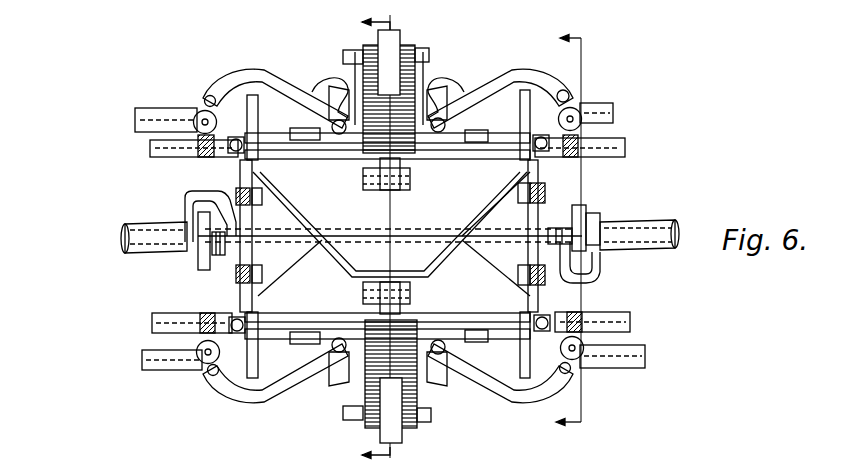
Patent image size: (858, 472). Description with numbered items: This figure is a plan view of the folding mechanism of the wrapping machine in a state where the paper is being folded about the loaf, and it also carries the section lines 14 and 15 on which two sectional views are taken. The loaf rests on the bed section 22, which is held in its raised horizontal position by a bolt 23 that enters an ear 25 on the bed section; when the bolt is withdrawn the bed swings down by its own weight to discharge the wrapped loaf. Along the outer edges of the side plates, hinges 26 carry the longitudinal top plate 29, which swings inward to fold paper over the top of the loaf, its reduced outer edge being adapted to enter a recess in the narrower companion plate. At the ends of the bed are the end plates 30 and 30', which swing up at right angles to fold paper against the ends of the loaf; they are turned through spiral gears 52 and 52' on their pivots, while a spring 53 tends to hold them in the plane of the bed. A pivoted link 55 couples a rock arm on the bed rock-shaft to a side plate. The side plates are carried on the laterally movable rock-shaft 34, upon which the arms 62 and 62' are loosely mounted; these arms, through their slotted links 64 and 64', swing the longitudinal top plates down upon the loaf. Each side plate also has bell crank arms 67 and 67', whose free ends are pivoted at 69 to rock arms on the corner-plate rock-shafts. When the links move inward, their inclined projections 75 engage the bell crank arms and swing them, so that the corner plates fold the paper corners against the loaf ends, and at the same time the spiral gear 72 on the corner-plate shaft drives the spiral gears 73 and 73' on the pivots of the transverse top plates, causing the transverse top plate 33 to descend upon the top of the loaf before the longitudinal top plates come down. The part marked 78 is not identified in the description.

The section line 14 is at (582, 228).
The section line 15 is at (390, 241).
The bed section 22 is at (390, 234).
The bolt 23 is at (126, 240).
The ear 25 is at (200, 260).
The hinge 26 is at (350, 150).
The longitudinal top plate 29 is at (390, 235).
The end plate 30 is at (400, 201).
The end plate 30' is at (394, 268).
The transverse top plate 33 is at (387, 234).
The rock-shaft 34 is at (600, 103).
The spiral gear 52 is at (410, 198).
The spiral gear 52' is at (407, 276).
The spring 53 is at (360, 420).
The pivoted link 55 is at (402, 36).
The arm 62 is at (388, 91).
The arm 62' is at (395, 397).
The link 64 is at (382, 55).
The link 64' is at (442, 406).
The bell crank arm 67 is at (388, 90).
The bell crank arm 67' is at (388, 373).
The pivot 69 is at (204, 99).
The spiral gear 72 is at (606, 346).
The spiral gear 73 is at (393, 133).
The spiral gear 73' is at (391, 311).
The inclined projection 75 is at (390, 212).
The bolt 78 is at (204, 157).